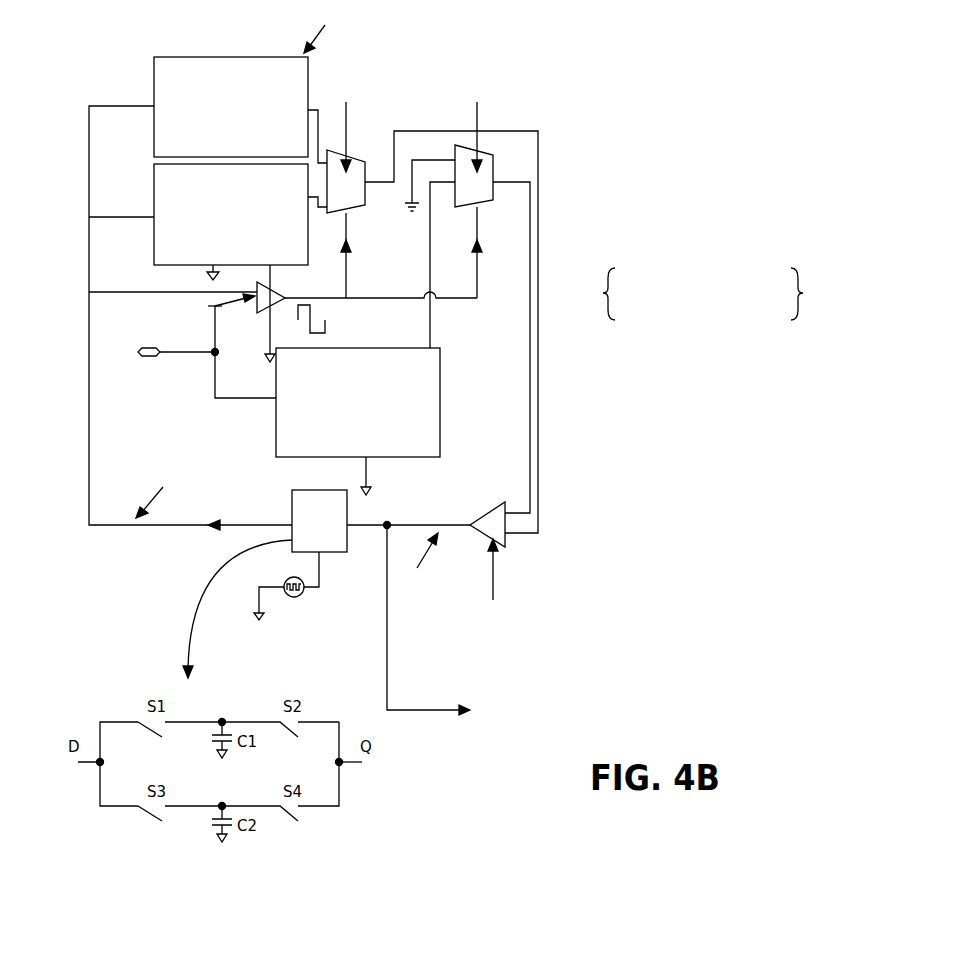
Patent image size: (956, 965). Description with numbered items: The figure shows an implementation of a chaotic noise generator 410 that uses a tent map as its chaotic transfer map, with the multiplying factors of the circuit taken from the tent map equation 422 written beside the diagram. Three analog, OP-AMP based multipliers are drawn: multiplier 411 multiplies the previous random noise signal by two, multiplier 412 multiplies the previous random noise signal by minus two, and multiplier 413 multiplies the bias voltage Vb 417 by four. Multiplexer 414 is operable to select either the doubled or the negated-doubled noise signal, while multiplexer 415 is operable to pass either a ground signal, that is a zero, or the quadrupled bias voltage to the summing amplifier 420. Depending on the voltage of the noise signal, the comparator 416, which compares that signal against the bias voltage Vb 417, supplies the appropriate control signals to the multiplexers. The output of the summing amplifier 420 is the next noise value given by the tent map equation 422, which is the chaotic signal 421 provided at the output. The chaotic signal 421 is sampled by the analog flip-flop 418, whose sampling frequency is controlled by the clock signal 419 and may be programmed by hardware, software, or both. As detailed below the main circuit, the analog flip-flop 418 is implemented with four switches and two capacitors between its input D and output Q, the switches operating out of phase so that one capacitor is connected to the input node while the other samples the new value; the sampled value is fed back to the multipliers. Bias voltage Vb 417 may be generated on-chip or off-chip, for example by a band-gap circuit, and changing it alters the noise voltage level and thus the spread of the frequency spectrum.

The chaotic noise generator 410 is at (602, 106).
The multiplier 411 is at (152, 78).
The multiplier 412 is at (152, 180).
The multiplier 413 is at (272, 443).
The multiplexer 414 is at (353, 217).
The multiplexer 415 is at (481, 207).
The comparator 416 is at (262, 313).
The bias voltage Vb 417 is at (133, 355).
The analog flip-flop 418 is at (348, 557).
The clock signal 419 is at (298, 603).
The summing amplifier 420 is at (510, 545).
The chaotic signal 421 is at (432, 713).
The tent map equation 422 is at (807, 300).